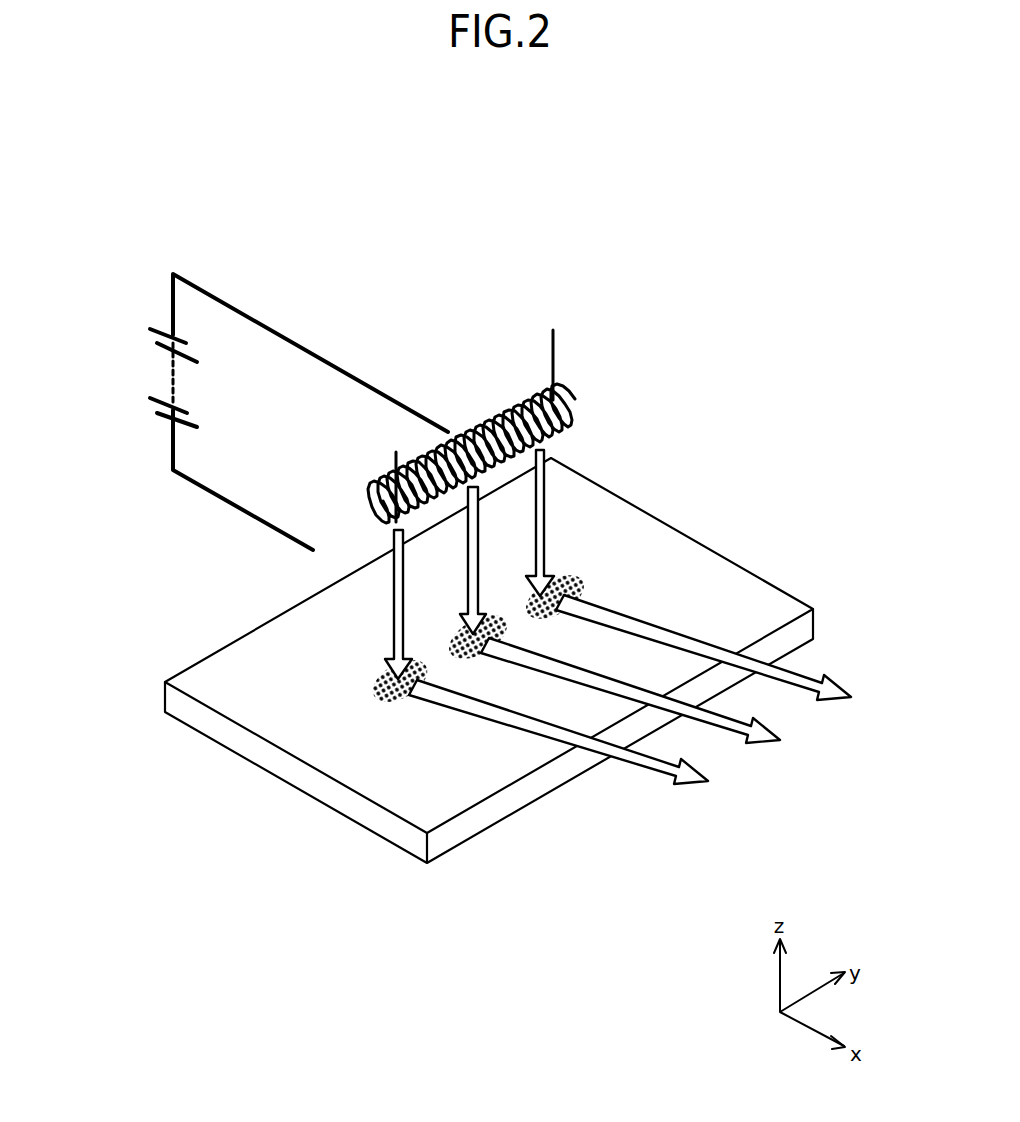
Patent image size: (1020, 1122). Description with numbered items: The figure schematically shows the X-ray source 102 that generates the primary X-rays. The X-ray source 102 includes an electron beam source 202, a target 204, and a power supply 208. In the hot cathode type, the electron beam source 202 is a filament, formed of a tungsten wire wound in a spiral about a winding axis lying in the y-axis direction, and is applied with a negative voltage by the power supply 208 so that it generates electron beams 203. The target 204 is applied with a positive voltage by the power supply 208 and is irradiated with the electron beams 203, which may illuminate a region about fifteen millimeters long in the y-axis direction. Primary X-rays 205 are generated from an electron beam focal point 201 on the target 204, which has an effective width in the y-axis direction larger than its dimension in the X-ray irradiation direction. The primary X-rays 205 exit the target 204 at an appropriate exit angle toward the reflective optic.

The X-ray source 102 is at (640, 338).
The electron beam focal point 201 is at (573, 585).
The electron beam source 202 is at (525, 402).
The electron beams 203 is at (397, 650).
The target 204 is at (480, 822).
The primary X-rays 205 is at (823, 687).
The power supply 208 is at (155, 368).